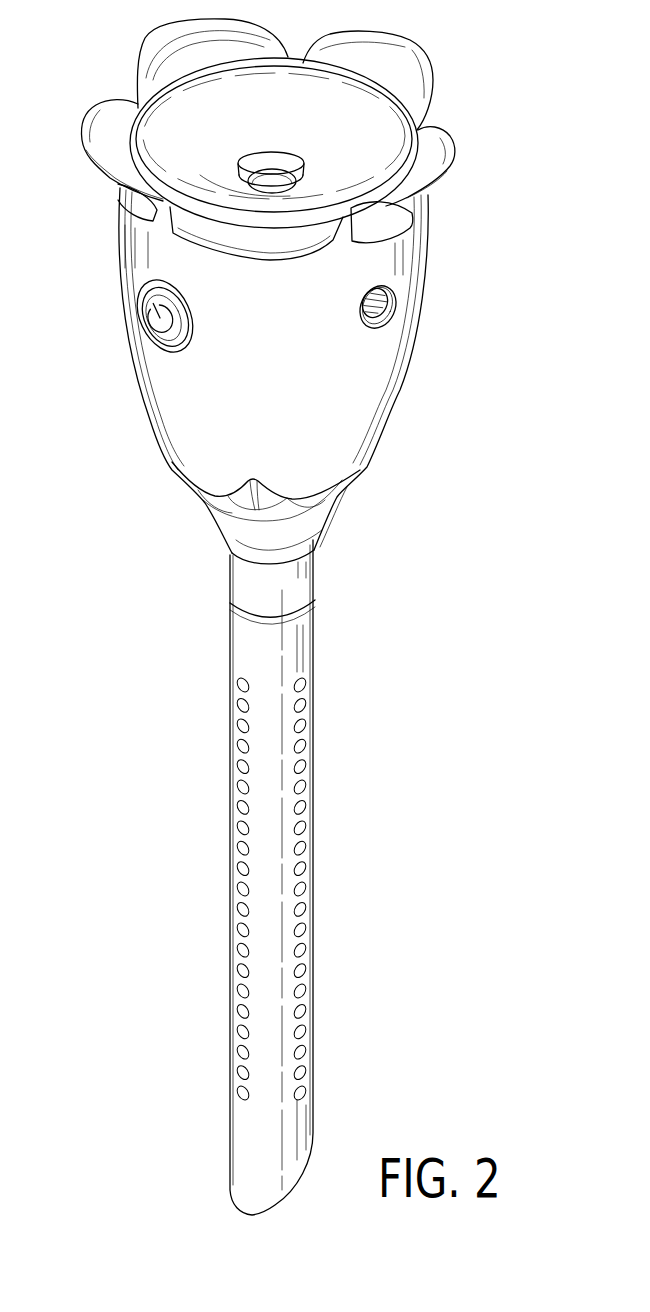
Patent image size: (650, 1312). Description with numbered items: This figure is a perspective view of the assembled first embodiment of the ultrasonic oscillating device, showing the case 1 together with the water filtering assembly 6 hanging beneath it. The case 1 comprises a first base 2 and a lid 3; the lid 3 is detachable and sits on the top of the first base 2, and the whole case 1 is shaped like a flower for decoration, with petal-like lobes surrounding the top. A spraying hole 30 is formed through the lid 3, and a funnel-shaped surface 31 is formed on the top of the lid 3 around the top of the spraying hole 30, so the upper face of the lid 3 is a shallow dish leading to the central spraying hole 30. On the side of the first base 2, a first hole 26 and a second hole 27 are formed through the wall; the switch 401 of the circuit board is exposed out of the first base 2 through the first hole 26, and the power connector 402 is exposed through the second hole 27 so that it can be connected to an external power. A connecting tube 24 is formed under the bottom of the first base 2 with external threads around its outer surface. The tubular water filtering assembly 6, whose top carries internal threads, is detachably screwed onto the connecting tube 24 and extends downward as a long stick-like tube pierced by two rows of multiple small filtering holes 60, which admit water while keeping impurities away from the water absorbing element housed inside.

The case 1 is at (275, 607).
The first base 2 is at (399, 409).
The lid 3 is at (342, 63).
The water filtering assembly 6 is at (325, 768).
The connecting tube 24 is at (292, 597).
The first hole 26 is at (165, 287).
The second hole 27 is at (388, 300).
The spraying hole 30 is at (262, 162).
The funnel-shaped surface 31 is at (363, 137).
The filtering holes 60 is at (303, 849).
The switch 401 is at (158, 326).
The power connector 402 is at (383, 310).